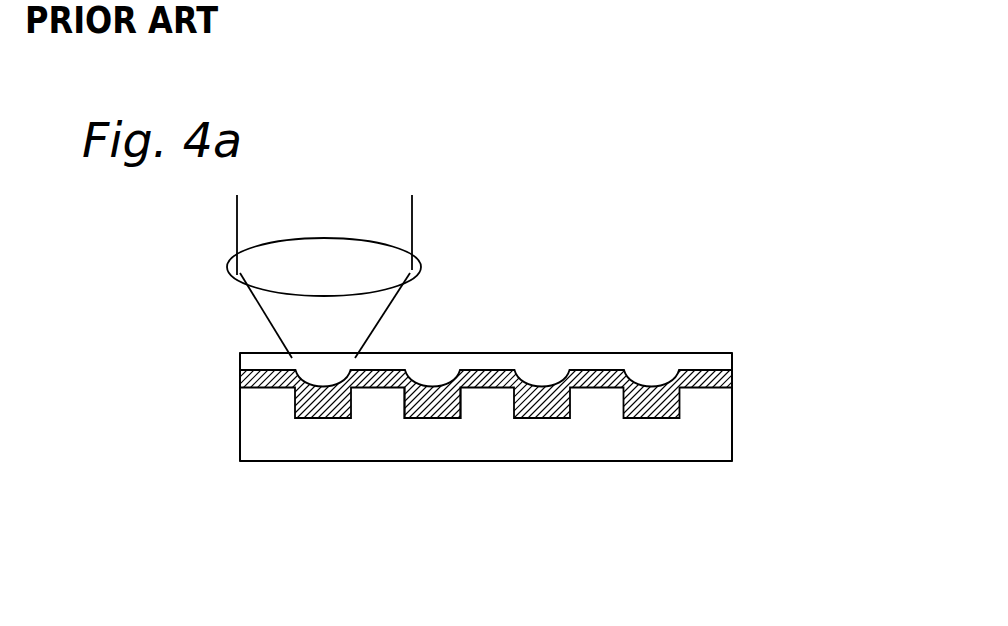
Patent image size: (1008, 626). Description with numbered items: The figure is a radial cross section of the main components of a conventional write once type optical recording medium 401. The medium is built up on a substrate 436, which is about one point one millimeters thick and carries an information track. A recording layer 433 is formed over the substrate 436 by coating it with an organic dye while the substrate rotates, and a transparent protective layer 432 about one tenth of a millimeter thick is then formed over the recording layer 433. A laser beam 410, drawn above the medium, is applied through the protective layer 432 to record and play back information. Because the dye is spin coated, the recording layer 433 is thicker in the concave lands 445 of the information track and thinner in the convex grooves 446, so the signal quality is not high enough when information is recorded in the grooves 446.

The laser beam 410 is at (415, 218).
The recording medium 401 is at (705, 335).
The transparent protective layer 432 is at (720, 362).
The recording layer 433 is at (732, 373).
The substrate 436 is at (708, 445).
The concave lands 445 is at (433, 418).
The convex grooves 446 is at (488, 370).